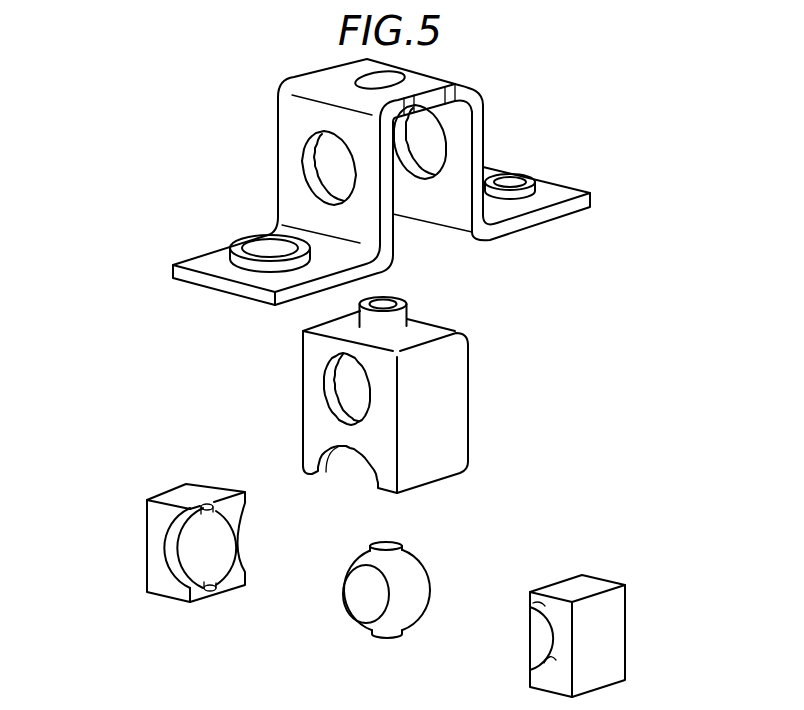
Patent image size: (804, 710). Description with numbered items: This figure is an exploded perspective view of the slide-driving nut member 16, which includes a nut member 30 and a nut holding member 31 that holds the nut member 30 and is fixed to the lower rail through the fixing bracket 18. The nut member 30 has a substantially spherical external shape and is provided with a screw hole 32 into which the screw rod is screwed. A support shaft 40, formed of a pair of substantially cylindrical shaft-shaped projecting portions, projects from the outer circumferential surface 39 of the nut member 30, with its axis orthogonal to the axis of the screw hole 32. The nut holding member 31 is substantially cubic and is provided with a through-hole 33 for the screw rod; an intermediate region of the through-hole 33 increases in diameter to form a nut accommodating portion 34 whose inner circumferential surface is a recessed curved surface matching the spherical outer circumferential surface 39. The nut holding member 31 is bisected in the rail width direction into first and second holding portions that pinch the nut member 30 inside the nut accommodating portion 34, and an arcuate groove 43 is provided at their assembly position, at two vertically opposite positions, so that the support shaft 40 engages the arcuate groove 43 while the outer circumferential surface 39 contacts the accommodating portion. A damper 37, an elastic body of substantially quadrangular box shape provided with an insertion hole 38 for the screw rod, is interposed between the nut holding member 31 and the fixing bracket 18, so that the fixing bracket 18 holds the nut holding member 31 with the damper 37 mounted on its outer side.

The slide-driving nut member 16 is at (678, 107).
The fixing bracket 18 is at (485, 130).
The nut member 30 is at (432, 588).
The nut holding member 31 is at (158, 495).
The screw hole 32 is at (354, 602).
The through-hole 33 is at (196, 566).
The nut accommodating portion 34 is at (173, 552).
The damper 37 is at (469, 387).
The insertion hole 38 is at (325, 384).
The outer circumferential surface 39 is at (413, 610).
The support shaft 40 is at (387, 545).
The arcuate groove 43 is at (205, 503).